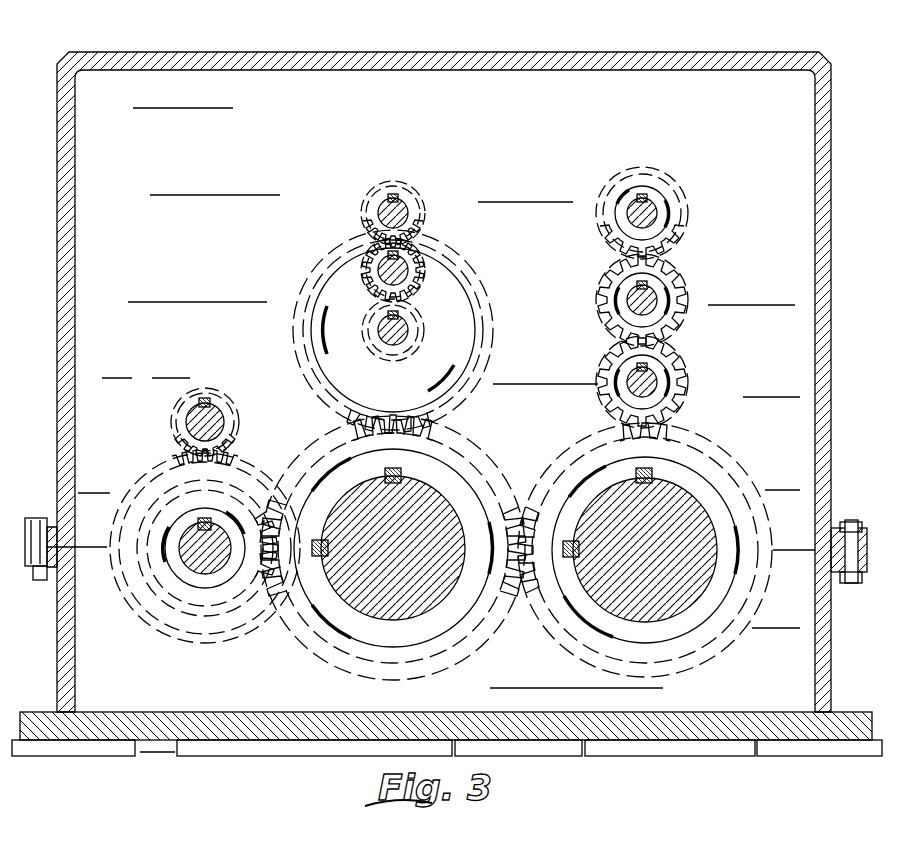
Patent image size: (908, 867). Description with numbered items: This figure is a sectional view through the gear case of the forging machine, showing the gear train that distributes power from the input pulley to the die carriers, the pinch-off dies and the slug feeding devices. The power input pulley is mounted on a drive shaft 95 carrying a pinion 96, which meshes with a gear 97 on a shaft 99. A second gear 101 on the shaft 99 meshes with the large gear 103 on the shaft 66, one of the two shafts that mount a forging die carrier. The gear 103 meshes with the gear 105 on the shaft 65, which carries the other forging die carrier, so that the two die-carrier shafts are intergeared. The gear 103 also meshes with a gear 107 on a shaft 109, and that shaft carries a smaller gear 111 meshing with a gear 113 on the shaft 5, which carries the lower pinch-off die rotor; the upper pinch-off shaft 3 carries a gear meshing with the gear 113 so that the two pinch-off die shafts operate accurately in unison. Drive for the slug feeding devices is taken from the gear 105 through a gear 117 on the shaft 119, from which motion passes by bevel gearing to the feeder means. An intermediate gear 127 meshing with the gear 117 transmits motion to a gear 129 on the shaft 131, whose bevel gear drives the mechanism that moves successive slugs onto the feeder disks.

The upper pinch-off shaft 3 is at (380, 217).
The shaft 5 is at (398, 270).
The shaft 65 is at (678, 500).
The shaft 66 is at (427, 500).
The drive shaft 95 is at (218, 415).
The pinion 96 is at (225, 428).
The gear 97 is at (243, 473).
The shaft 99 is at (196, 537).
The gear 101 is at (247, 582).
The gear 103 is at (457, 458).
The gear 105 is at (698, 453).
The gear 107 is at (477, 340).
The shaft 109 is at (387, 338).
The smaller gear 111 is at (412, 333).
The gear 113 is at (413, 280).
The gear 117 is at (670, 397).
The shaft 119 is at (627, 387).
The intermediate gear 127 is at (672, 303).
The gear 129 is at (672, 228).
The shaft 131 is at (648, 202).